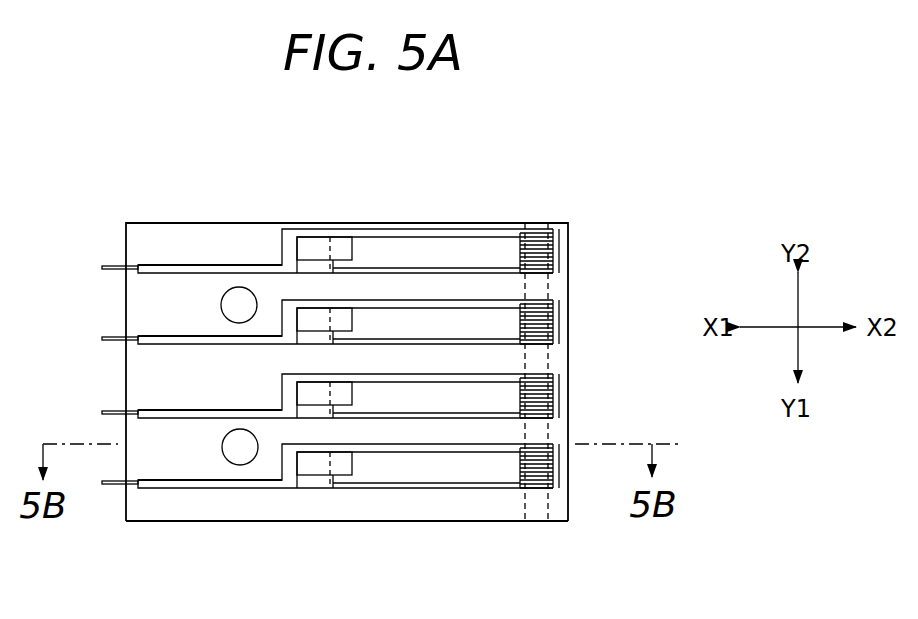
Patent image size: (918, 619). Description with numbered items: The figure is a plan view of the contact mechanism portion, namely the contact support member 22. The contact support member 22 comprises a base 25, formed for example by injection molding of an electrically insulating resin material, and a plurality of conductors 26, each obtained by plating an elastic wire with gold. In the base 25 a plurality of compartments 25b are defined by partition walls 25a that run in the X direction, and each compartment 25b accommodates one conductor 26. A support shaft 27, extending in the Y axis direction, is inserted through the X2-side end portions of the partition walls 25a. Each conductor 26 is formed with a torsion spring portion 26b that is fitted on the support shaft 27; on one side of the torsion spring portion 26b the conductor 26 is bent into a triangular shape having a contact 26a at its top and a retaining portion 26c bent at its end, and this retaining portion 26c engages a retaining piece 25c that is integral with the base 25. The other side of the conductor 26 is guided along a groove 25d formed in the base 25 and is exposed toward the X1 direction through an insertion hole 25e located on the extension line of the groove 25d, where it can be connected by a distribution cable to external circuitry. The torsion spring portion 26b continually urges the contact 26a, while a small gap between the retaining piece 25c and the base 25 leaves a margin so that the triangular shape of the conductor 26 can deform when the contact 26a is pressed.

The contact support member 22 is at (558, 206).
The base 25 is at (215, 232).
The partition wall 25a is at (455, 430).
The compartment 25b is at (512, 398).
The retaining piece 25c is at (342, 320).
The groove 25d is at (203, 335).
The insertion hole 25e is at (132, 267).
The conductor 26 is at (372, 489).
The contact 26a is at (407, 489).
The torsion spring portion 26b is at (558, 486).
The retaining portion 26c is at (323, 484).
The support shaft 27 is at (548, 494).